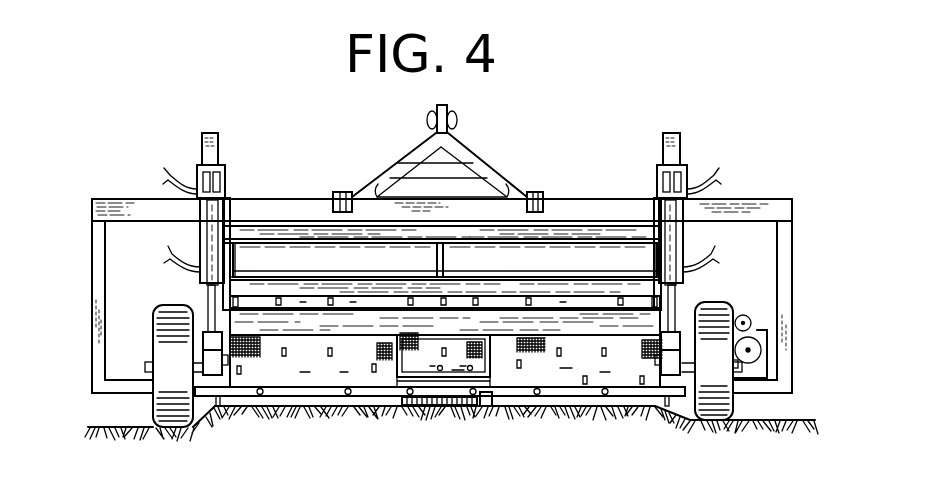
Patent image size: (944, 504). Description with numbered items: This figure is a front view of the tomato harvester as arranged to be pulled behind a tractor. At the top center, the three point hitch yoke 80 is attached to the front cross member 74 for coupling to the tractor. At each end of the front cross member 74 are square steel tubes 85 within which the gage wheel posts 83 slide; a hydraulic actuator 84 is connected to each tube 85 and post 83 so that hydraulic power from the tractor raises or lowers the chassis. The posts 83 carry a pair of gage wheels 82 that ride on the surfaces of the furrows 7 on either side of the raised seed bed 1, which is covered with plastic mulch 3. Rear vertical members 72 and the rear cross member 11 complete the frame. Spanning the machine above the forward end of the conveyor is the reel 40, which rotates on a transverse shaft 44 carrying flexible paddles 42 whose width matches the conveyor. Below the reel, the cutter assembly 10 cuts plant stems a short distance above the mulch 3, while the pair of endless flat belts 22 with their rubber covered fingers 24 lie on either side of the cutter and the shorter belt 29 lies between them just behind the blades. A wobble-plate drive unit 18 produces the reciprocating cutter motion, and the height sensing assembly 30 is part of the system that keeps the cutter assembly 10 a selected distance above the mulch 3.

The seed bed 1 is at (340, 409).
The plastic mulch 3 is at (331, 412).
The furrows 7 is at (102, 426).
The cutter assembly 10 is at (438, 422).
The rear cross member 11 is at (141, 398).
The wobble-plate drive unit 18 is at (753, 368).
The endless flat belts 22 is at (590, 366).
The rubber covered fingers 24 is at (300, 366).
The shorter belt 29 is at (457, 348).
The height sensing assembly 30 is at (494, 410).
The reel 40 is at (582, 206).
The flexible paddles 42 is at (445, 334).
The shaft 44 is at (327, 270).
The rear vertical members 72 is at (92, 268).
The front cross member 74 is at (138, 203).
The three point hitch yoke 80 is at (384, 178).
The gage wheels 82 is at (156, 324).
The gage wheel posts 83 is at (217, 151).
The hydraulic actuator 84 is at (211, 257).
The square steel tubes 85 is at (225, 172).